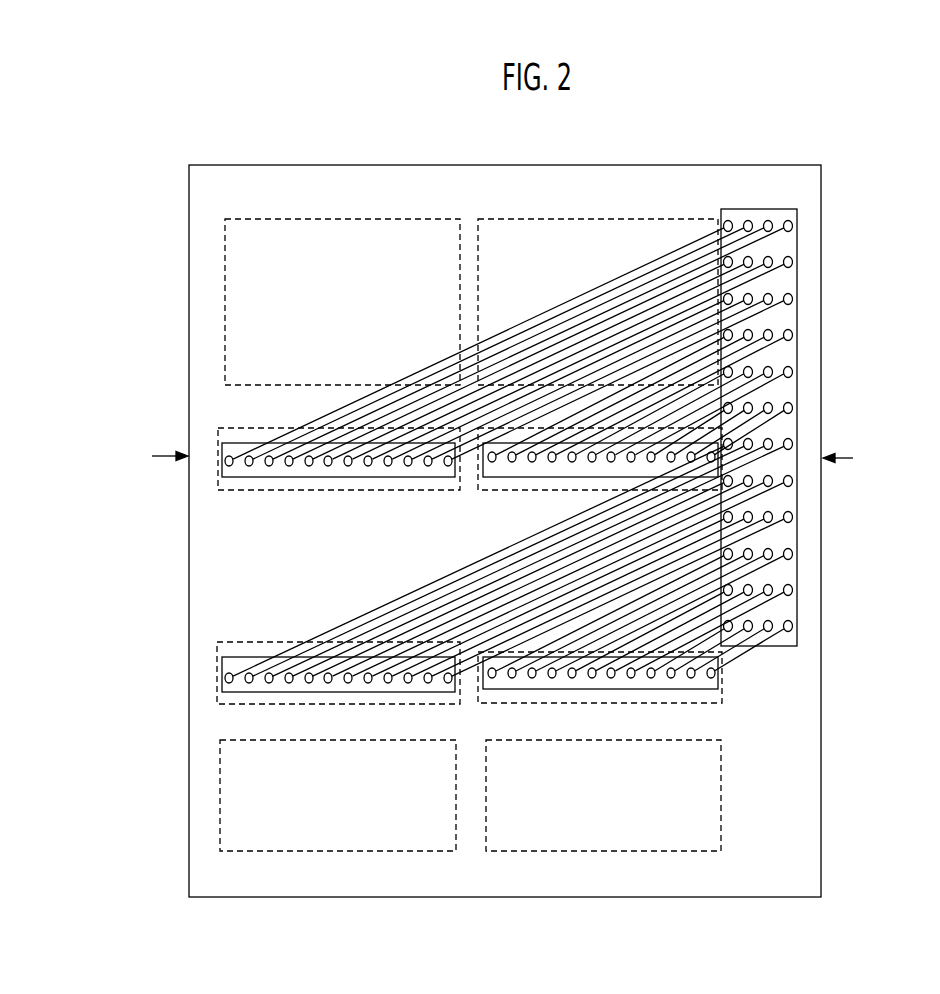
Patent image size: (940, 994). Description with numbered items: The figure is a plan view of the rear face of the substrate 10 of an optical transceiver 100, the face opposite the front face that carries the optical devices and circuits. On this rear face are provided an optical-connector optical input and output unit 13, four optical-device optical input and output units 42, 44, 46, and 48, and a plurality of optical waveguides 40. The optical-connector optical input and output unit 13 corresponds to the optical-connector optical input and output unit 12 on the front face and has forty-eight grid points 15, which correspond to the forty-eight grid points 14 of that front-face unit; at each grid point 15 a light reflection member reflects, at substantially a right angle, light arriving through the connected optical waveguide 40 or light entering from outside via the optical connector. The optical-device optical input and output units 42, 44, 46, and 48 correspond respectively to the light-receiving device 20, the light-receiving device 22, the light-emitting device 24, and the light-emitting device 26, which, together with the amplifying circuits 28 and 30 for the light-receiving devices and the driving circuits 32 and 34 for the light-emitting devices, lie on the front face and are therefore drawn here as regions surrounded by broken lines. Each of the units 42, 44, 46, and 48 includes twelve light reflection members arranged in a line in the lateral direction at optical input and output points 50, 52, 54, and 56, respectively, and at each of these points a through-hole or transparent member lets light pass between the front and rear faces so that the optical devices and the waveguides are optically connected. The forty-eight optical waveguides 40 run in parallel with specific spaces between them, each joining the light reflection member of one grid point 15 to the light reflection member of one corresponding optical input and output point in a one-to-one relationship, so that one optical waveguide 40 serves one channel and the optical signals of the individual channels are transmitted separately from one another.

The optical transceiver 100 is at (603, 119).
The substrate 10 is at (821, 228).
The optical-connector optical input and output unit 12 is at (797, 390).
The optical-connector optical input and output unit 13 is at (799, 427).
The grid points 14 is at (793, 296).
The grid points 15 is at (801, 426).
The light-receiving device 20 is at (247, 430).
The light-receiving device 22 is at (480, 491).
The light-emitting device 24 is at (258, 642).
The light-emitting device 26 is at (512, 704).
The amplifying circuit 28 is at (362, 243).
The amplifying circuit 30 is at (587, 243).
The driving circuit 32 is at (390, 838).
The driving circuit 34 is at (712, 802).
The optical waveguides 40 is at (586, 295).
The optical-device optical input and output unit 42 is at (303, 478).
The optical-device optical input and output unit 44 is at (518, 478).
The optical-device optical input and output unit 46 is at (236, 697).
The optical-device optical input and output unit 48 is at (700, 692).
The optical input and output points 50 is at (388, 466).
The optical input and output points 52 is at (569, 462).
The optical input and output points 54 is at (323, 692).
The optical input and output points 56 is at (590, 692).